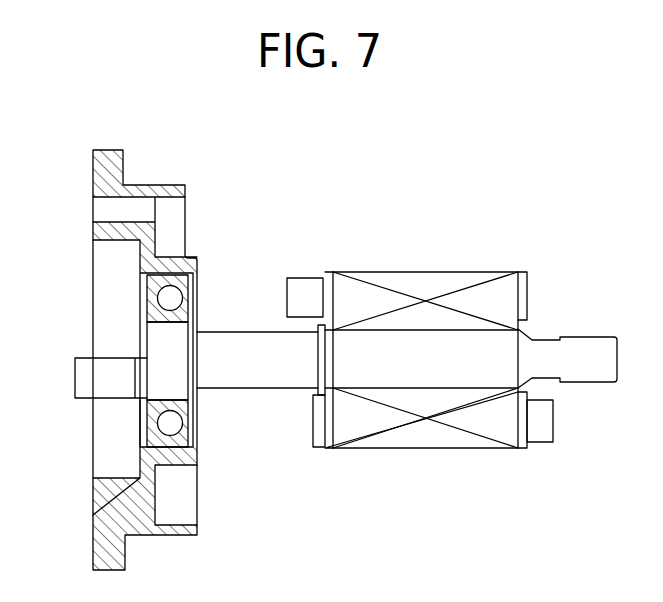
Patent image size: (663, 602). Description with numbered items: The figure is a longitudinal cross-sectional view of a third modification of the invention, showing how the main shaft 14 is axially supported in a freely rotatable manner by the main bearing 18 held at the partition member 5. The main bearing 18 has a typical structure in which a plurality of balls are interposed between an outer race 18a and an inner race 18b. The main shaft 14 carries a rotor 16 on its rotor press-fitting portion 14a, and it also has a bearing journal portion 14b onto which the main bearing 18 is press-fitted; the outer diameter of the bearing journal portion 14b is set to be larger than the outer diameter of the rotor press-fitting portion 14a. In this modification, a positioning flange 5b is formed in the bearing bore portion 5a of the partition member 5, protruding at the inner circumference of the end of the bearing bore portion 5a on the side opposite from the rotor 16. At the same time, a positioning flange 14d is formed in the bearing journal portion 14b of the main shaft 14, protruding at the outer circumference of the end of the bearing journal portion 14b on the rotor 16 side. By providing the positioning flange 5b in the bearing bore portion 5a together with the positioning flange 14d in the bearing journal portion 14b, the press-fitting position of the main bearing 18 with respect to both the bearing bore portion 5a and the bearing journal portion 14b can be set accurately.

The partition member 5 is at (92, 181).
The bearing bore portion 5a is at (177, 425).
The positioning flange 5b is at (147, 437).
The main shaft 14 is at (326, 377).
The rotor press-fitting portion 14a is at (442, 380).
The bearing journal portion 14b is at (173, 369).
The positioning flange 14d is at (172, 337).
The rotor 16 is at (424, 272).
The main bearing 18 is at (144, 332).
The outer race 18a is at (192, 283).
The inner race 18b is at (148, 292).